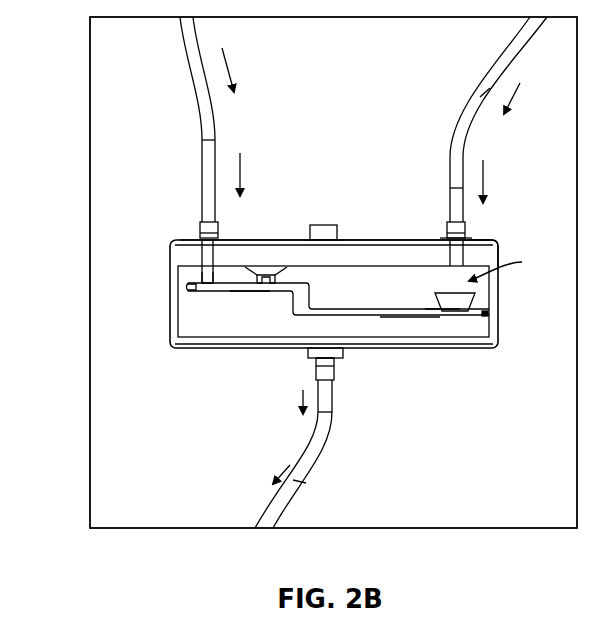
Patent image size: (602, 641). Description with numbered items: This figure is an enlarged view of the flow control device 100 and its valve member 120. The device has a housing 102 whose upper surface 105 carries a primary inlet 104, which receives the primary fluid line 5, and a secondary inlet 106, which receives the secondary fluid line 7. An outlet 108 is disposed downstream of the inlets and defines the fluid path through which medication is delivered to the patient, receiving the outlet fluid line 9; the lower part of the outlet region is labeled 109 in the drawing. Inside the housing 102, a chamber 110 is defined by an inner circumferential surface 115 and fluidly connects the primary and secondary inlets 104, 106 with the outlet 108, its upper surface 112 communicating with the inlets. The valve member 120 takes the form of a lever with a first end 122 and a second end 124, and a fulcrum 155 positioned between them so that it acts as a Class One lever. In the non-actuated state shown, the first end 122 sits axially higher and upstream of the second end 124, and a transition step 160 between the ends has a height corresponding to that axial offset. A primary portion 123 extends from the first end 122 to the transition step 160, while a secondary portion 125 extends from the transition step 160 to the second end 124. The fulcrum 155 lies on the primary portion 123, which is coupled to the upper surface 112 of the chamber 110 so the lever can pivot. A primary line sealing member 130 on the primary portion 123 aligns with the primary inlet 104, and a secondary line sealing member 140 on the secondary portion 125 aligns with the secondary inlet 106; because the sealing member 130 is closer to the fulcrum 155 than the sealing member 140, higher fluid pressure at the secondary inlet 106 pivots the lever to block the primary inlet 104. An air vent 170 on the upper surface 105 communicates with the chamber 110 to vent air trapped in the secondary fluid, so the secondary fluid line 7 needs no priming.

The flow control device 100 is at (112, 200).
The primary fluid line 5 is at (200, 78).
The secondary fluid line 7 is at (473, 128).
The outlet fluid line 9 is at (330, 442).
The housing 102 is at (500, 241).
The primary inlet 104 is at (200, 236).
The upper surface 105 is at (407, 240).
The secondary inlet 106 is at (467, 235).
The outlet 108 is at (310, 352).
The outlet port 109 is at (308, 357).
The chamber 110 is at (514, 265).
The upper surface of the chamber 112 is at (270, 283).
The inner circumferential surface 115 is at (177, 303).
The valve member 120 is at (397, 317).
The first end 122 is at (197, 287).
The primary portion 123 is at (250, 291).
The second end 124 is at (487, 314).
The secondary portion 125 is at (435, 313).
The primary line sealing member 130 is at (203, 277).
The secondary line sealing member 140 is at (470, 308).
The fulcrum 155 is at (258, 276).
The transition step 160 is at (310, 300).
The air vent 170 is at (337, 235).